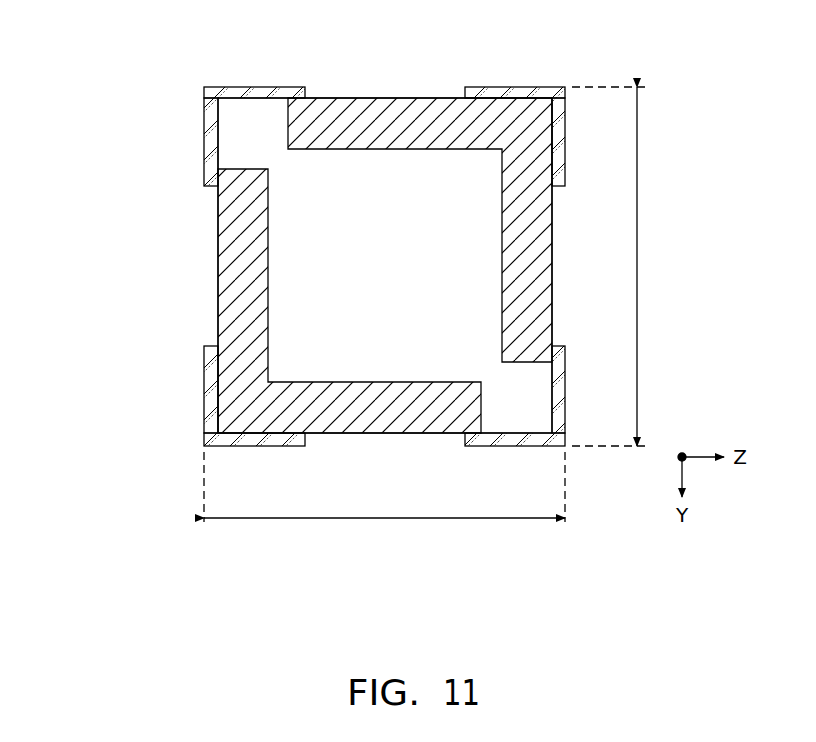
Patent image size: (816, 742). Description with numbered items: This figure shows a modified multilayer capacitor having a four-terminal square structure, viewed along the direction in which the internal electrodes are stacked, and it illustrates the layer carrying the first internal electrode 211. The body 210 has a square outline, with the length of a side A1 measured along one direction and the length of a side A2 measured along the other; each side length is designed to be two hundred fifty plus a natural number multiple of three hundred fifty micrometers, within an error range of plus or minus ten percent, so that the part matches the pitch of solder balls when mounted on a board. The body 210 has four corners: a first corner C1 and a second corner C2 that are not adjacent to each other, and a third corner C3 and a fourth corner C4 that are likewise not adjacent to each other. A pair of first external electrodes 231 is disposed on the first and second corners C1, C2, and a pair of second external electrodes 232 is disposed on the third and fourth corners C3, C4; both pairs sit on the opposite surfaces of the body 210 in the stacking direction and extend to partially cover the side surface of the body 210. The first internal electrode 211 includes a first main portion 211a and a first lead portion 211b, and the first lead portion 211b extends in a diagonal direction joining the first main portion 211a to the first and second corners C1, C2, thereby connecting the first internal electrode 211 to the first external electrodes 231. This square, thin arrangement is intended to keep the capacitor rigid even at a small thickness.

The body 210 is at (426, 97).
The first internal electrode 211 is at (325, 112).
The first main portion 211a is at (288, 226).
The first lead portion 211b is at (245, 150).
The first external electrode 231 is at (253, 92).
The second external electrode 232 is at (513, 92).
The first corner C1 is at (216, 88).
The second corner C2 is at (554, 432).
The third corner C3 is at (216, 432).
The fourth corner C4 is at (554, 88).
The length of a side A1 is at (384, 502).
The length of a side A2 is at (622, 266).